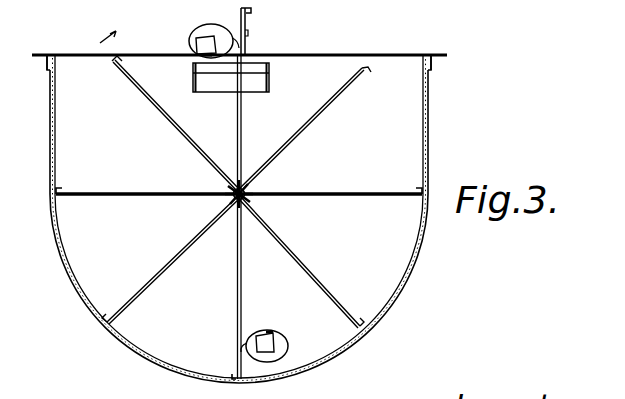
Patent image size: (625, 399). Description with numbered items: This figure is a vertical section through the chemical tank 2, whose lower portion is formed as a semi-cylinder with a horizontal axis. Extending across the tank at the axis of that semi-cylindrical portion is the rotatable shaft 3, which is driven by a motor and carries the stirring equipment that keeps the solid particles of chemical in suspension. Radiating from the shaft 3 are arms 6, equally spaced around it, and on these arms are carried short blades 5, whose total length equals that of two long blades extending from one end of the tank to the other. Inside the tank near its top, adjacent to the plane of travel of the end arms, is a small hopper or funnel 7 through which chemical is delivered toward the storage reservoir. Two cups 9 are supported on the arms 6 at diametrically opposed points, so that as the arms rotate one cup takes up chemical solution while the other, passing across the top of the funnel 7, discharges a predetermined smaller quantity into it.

The chemical tank 2 is at (428, 258).
The rotatable shaft 3 is at (226, 224).
The short blades 5 is at (252, 10).
The arms 6 is at (285, 140).
The hopper or funnel 7 is at (272, 86).
The cups 9 is at (196, 28).